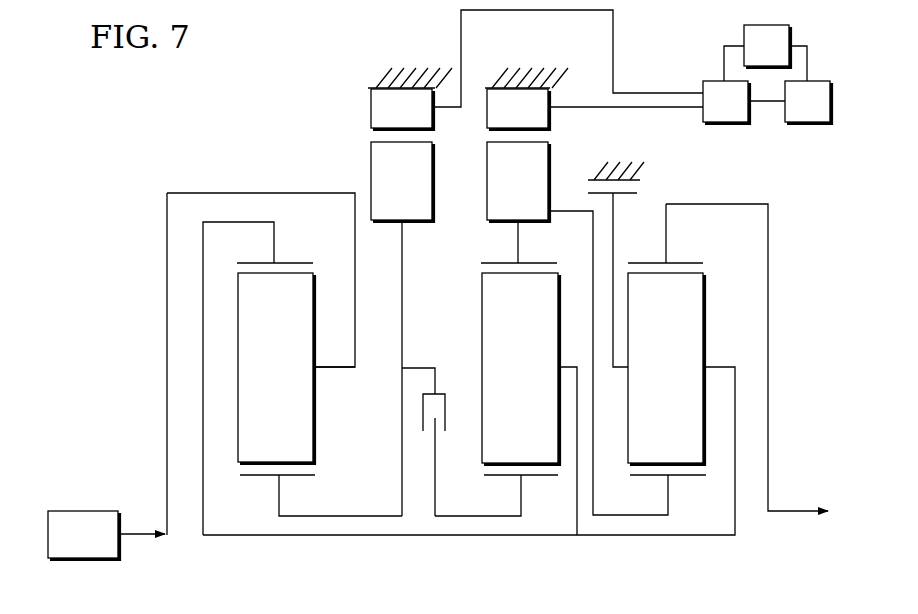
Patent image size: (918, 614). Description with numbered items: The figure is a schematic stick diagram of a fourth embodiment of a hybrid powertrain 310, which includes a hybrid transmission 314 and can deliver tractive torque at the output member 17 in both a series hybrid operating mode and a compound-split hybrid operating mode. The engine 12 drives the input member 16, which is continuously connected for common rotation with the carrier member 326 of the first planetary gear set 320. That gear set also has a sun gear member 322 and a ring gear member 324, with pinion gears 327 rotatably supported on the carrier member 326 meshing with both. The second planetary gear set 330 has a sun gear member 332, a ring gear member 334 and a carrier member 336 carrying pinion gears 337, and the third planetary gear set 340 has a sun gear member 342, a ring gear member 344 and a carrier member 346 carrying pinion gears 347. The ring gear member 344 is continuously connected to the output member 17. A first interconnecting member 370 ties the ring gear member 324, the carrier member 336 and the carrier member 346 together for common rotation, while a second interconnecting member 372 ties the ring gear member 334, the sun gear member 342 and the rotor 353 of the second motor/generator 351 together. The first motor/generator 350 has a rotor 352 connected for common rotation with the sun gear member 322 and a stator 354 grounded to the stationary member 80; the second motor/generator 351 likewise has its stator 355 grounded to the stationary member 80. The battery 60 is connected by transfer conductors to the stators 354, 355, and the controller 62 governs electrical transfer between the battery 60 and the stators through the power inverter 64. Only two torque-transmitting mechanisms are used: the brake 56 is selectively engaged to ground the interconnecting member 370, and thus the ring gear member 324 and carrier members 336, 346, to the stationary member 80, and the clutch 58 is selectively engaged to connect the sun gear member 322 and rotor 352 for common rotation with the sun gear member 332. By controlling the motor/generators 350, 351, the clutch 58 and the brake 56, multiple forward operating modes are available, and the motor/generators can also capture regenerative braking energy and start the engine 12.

The engine 12 is at (84, 535).
The input member 16 is at (140, 533).
The output member 17 is at (805, 510).
The brake 56 is at (644, 186).
The clutch 58 is at (430, 434).
The battery 60 is at (765, 53).
The controller 62 is at (808, 102).
The power inverter 64 is at (744, 102).
The stationary member 80 is at (386, 70).
The hybrid powertrain 310 is at (138, 273).
The hybrid transmission 314 is at (238, 161).
The first planetary gear set 320 is at (261, 492).
The sun gear member 322 is at (300, 477).
The ring gear member 324 is at (285, 262).
The carrier member 326 is at (333, 370).
The pinion gears 327 is at (276, 368).
The second planetary gear set 330 is at (542, 491).
The sun gear member 332 is at (503, 477).
The ring gear member 334 is at (527, 262).
The carrier member 336 is at (568, 365).
The pinion gears 337 is at (521, 369).
The third planetary gear set 340 is at (651, 492).
The sun gear member 342 is at (680, 477).
The ring gear member 344 is at (658, 262).
The carrier member 346 is at (620, 369).
The pinion gears 347 is at (666, 369).
The first motor/generator 350 is at (447, 129).
The second motor/generator 351 is at (560, 120).
The rotor 352 is at (402, 329).
The rotor 353 is at (518, 182).
The stator 354 is at (402, 109).
The stator 355 is at (518, 109).
The first interconnecting member 370 is at (430, 537).
The second interconnecting member 372 is at (649, 516).